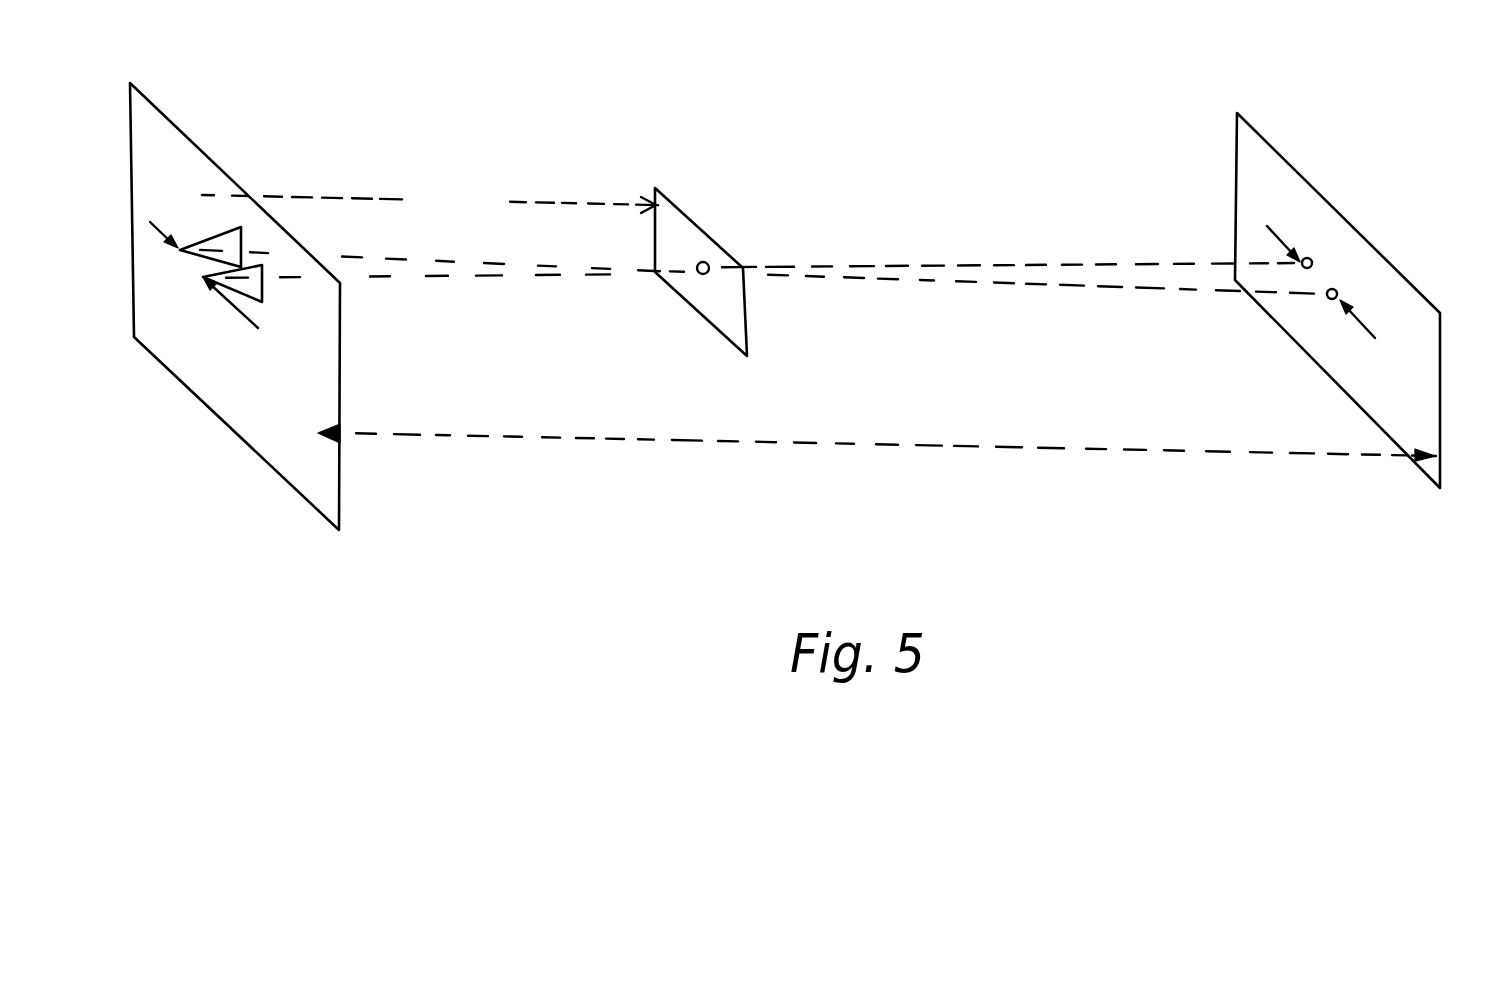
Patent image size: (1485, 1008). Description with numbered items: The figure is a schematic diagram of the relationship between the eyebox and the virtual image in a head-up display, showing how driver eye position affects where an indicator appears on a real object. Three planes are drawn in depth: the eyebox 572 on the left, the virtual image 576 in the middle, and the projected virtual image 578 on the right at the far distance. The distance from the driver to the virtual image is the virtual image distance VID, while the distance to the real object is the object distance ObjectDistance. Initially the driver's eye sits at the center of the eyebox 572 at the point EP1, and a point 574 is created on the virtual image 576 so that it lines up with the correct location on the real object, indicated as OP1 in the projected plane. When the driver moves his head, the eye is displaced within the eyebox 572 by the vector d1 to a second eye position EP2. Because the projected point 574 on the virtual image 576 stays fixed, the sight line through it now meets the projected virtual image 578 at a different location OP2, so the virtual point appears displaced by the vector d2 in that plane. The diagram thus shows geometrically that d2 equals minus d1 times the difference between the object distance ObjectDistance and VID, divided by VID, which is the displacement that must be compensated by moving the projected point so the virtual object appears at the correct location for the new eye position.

The eyebox 572 is at (308, 507).
The point 574 is at (702, 276).
The virtual image 576 is at (680, 209).
The projected virtual image 578 is at (1237, 147).
The eye position EP1 is at (178, 251).
The second eye position EP2 is at (200, 282).
The first object point OP1 is at (1332, 300).
The second object point OP2 is at (1307, 258).
The displacement vector d1 is at (260, 324).
The displacement vector d2 is at (1382, 339).
The virtual image distance VID is at (430, 199).
The object distance ObjectDistance is at (805, 442).